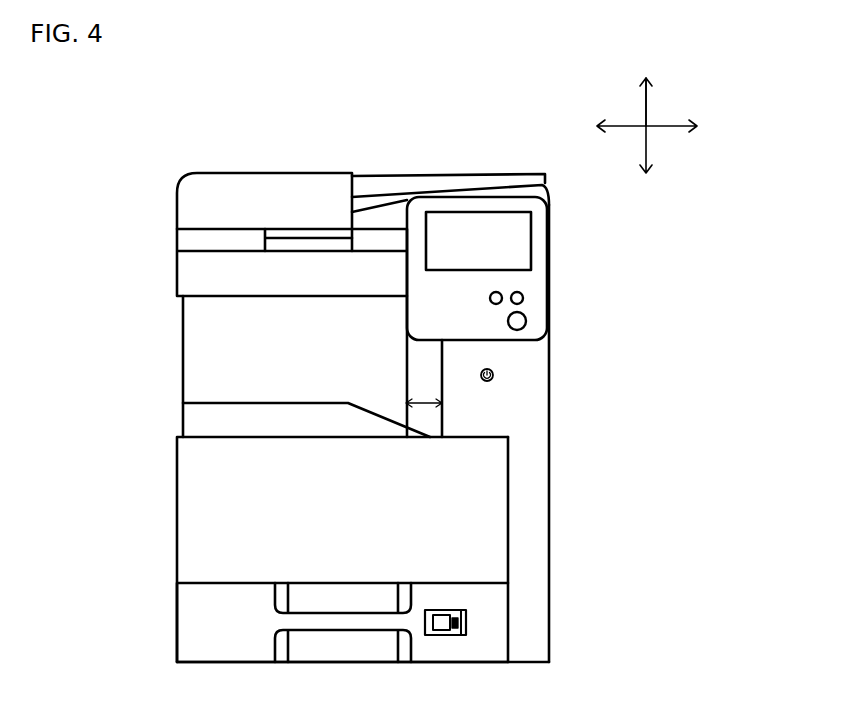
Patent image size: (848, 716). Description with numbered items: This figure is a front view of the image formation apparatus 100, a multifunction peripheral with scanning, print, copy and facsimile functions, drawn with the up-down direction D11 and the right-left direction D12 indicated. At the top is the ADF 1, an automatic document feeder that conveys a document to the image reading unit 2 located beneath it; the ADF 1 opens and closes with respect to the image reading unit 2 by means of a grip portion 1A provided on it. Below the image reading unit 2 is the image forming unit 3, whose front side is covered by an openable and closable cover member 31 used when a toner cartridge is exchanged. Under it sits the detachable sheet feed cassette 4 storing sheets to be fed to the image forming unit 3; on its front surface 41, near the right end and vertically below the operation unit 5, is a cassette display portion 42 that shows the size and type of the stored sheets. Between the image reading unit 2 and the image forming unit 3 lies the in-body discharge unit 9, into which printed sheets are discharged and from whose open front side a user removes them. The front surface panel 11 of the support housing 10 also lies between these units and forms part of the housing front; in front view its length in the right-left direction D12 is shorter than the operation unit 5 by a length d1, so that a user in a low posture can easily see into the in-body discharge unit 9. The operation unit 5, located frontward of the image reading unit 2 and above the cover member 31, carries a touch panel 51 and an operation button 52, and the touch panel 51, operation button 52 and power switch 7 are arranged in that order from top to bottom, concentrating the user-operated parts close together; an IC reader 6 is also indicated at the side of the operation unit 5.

The image formation apparatus 100 is at (101, 133).
The ADF 1 is at (175, 205).
The grip portion 1A is at (295, 240).
The image reading unit 2 is at (175, 277).
The image forming unit 3 is at (177, 495).
The cover member 31 is at (353, 516).
The sheet feed cassette 4 is at (177, 618).
The front surface 41 is at (238, 630).
The cassette display portion 42 is at (466, 622).
The operation unit 5 is at (405, 275).
The touch panel 51 is at (490, 228).
The operation button 52 is at (481, 322).
The IC reader 6 is at (550, 303).
The power switch 7 is at (490, 382).
The in-body discharge unit 9 is at (303, 400).
The support housing 10 is at (550, 355).
The front surface panel 11 is at (484, 416).
The length d1 is at (424, 390).
The up-down direction D11 is at (647, 148).
The right-left direction D12 is at (619, 123).